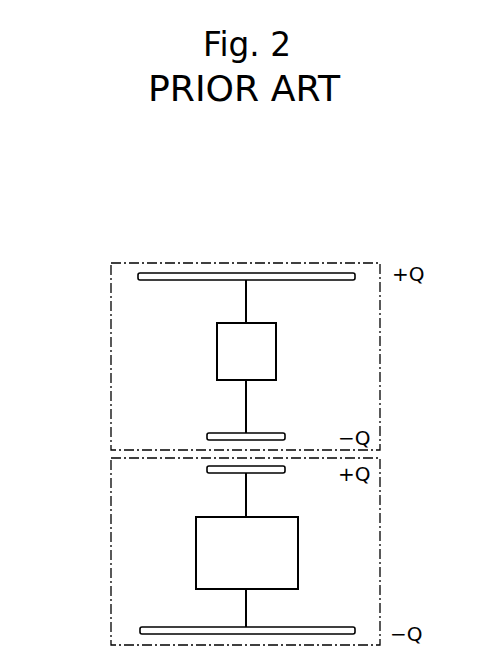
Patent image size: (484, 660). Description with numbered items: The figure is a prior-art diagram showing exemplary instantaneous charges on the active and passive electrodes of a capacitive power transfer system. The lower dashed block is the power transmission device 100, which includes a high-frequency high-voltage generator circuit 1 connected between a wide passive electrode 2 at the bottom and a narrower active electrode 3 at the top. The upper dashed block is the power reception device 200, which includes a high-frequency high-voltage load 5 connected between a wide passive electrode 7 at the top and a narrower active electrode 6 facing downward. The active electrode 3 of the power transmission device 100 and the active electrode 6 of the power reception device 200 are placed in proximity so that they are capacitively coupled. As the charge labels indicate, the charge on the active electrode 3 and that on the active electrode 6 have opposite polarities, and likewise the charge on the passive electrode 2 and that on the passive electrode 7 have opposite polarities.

The high-frequency high-voltage generator circuit 1 is at (298, 550).
The passive electrode 2 is at (310, 626).
The active electrode 3 is at (280, 474).
The high-frequency high-voltage load 5 is at (276, 350).
The active electrode 6 is at (278, 433).
The passive electrode 7 is at (303, 281).
The power transmission device 100 is at (110, 557).
The power reception device 200 is at (110, 362).